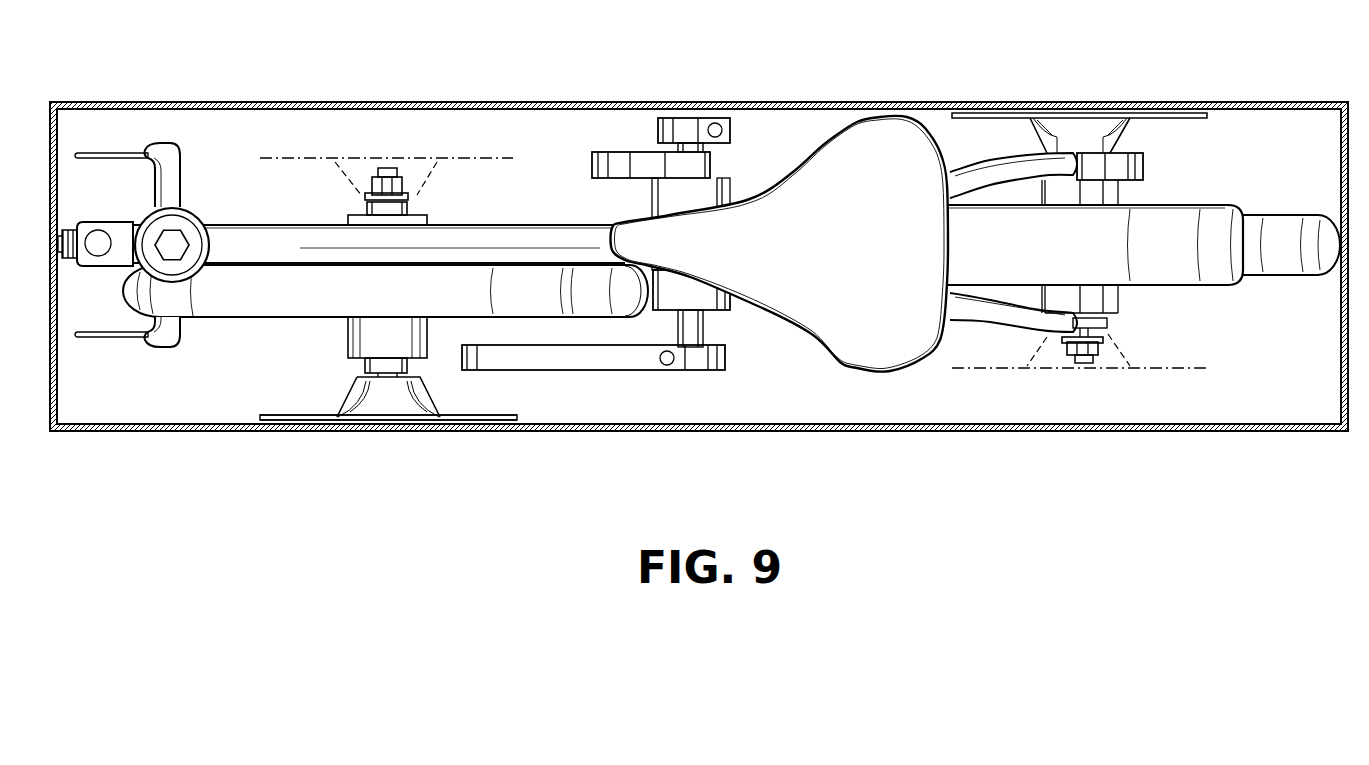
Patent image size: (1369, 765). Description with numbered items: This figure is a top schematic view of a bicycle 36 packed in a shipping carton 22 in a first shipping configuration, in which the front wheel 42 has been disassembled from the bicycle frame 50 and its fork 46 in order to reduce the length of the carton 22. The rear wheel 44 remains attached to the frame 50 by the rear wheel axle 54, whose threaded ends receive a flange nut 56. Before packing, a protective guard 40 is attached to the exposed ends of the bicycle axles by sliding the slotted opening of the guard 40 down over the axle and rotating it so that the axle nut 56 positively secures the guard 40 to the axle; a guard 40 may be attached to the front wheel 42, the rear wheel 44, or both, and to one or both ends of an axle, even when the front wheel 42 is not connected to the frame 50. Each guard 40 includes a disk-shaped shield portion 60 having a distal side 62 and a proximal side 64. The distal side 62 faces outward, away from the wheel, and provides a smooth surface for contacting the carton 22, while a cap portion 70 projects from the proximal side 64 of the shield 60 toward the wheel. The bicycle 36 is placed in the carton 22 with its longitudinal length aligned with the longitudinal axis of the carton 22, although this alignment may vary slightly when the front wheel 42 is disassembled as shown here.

The shipping carton 22 is at (795, 101).
The bicycle 36 is at (575, 134).
The protective guard 40 is at (291, 151).
The front wheel 42 is at (273, 307).
The rear wheel 44 is at (1298, 285).
The fork 46 is at (117, 152).
The bicycle frame 50 is at (250, 232).
The rear wheel axle 54 is at (386, 168).
The flange nut 56 is at (407, 192).
The shield portion 60 is at (520, 415).
The distal side 62 is at (292, 425).
The proximal side 64 is at (292, 414).
The cap portion 70 is at (421, 389).